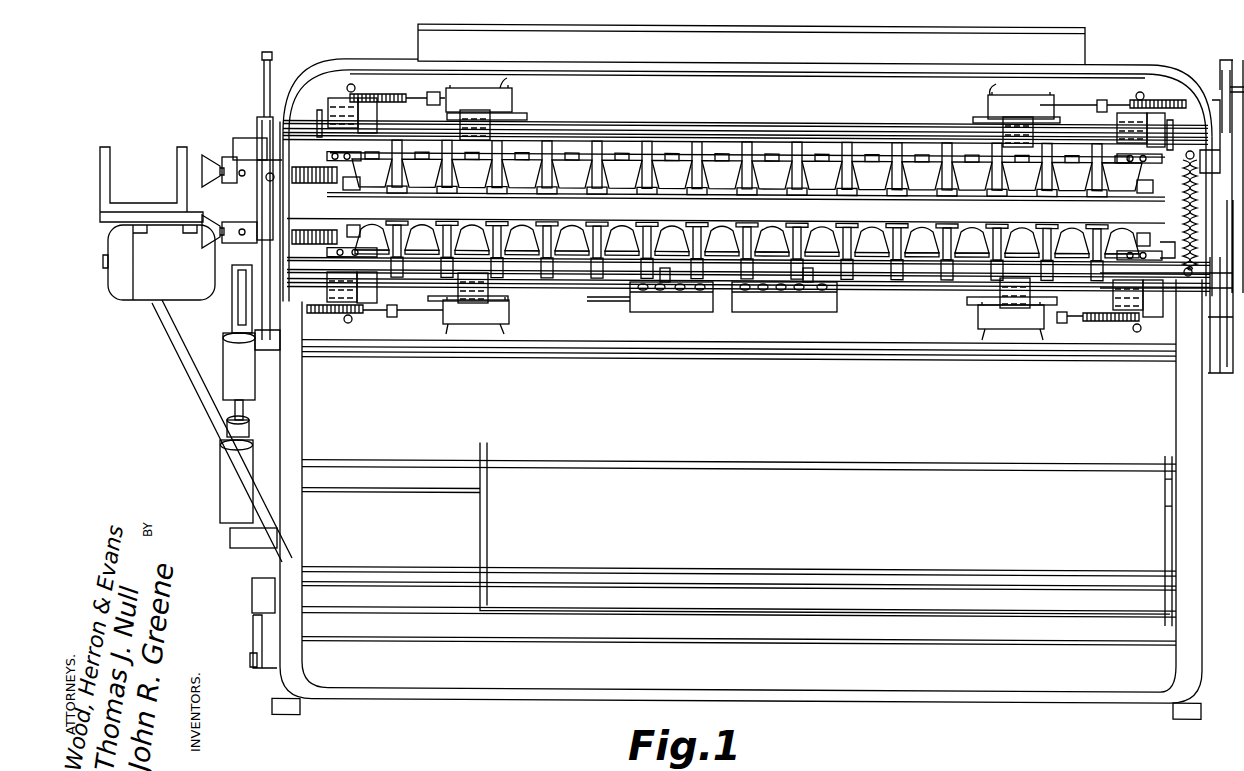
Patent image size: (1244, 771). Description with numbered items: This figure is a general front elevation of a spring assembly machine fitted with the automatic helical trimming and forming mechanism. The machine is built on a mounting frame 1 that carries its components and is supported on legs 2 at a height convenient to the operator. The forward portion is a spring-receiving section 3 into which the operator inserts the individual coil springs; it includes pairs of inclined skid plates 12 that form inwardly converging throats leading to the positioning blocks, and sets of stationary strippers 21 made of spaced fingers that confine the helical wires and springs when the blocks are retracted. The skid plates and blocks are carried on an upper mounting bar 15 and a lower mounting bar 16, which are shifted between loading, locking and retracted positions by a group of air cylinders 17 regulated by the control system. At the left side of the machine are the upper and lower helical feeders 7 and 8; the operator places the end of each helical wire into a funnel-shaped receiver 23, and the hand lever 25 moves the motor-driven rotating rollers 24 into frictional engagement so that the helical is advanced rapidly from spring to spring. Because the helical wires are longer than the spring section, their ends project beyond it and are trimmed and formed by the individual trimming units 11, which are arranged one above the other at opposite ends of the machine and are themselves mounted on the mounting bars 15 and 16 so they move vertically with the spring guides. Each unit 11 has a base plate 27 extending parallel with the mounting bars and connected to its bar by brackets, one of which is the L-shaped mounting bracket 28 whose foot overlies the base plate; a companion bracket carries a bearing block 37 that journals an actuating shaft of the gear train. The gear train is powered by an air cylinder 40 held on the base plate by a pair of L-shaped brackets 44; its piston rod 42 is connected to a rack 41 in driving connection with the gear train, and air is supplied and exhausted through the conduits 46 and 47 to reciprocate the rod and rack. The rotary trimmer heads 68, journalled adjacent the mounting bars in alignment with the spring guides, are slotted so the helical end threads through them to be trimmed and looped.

The mounting frame 1 is at (812, 105).
The legs 2 is at (295, 527).
The spring-receiving section 3 is at (746, 188).
The upper helical feeder 7 is at (246, 140).
The lower helical feeder 8 is at (250, 250).
The trimming and forming unit 11 is at (376, 87).
The inclined skid plates 12 is at (747, 205).
The upper mounting bar 15 is at (1168, 172).
The lower mounting bar 16 is at (1172, 260).
The air cylinders 17 is at (220, 470).
The stationary strippers 21 is at (608, 213).
The funnel-shaped receivers 23 is at (208, 158).
The rotating rollers 24 is at (312, 185).
The hand lever 25 is at (266, 181).
The base plate 27 is at (412, 103).
The mounting bracket 28 is at (512, 292).
The bearing block 37 is at (336, 105).
The air cylinder 40 is at (1000, 93).
The rack 41 is at (392, 94).
The piston rod 42 is at (1068, 100).
The L-shaped brackets 44 is at (508, 312).
The conduit 46 is at (510, 84).
The conduit 47 is at (1025, 340).
The trimmer head 68 is at (358, 190).